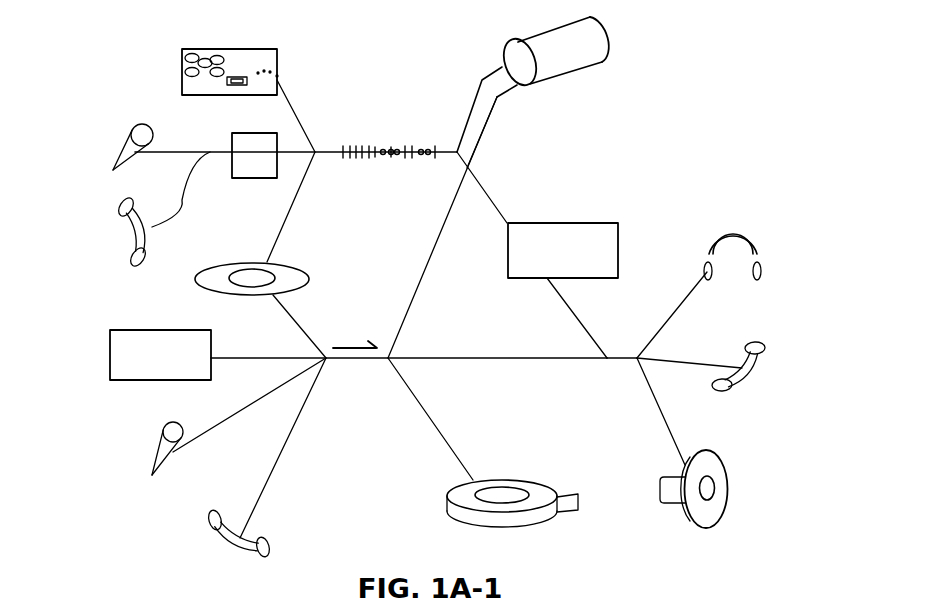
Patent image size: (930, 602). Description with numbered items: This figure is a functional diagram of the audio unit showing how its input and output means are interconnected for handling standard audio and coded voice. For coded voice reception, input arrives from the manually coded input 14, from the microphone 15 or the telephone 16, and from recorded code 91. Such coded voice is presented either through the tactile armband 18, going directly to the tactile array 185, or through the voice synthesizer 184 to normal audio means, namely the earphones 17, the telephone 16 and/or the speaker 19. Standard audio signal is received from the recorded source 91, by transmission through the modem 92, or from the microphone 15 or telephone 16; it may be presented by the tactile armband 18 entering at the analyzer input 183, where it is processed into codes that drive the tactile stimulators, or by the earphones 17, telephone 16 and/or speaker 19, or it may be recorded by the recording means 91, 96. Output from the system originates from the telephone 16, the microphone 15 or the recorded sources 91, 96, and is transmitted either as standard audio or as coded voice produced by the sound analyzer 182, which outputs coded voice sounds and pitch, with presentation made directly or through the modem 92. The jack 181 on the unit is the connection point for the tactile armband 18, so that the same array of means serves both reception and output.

The manually coded input 14 is at (253, 60).
The microphone 15 is at (118, 160).
The telephone 16 is at (130, 225).
The earphones 17 is at (735, 222).
The tactile armband 18 is at (607, 26).
The speaker 19 is at (715, 505).
The recorded code 91 is at (290, 275).
The modem 92 is at (110, 350).
The recorded source 96 is at (527, 487).
The tactile armband jack 181 is at (388, 148).
The sound analyzer 182 is at (254, 155).
The analyzer input 183 is at (486, 120).
The voice synthesizer 184 is at (593, 223).
The tactile array 185 is at (477, 97).